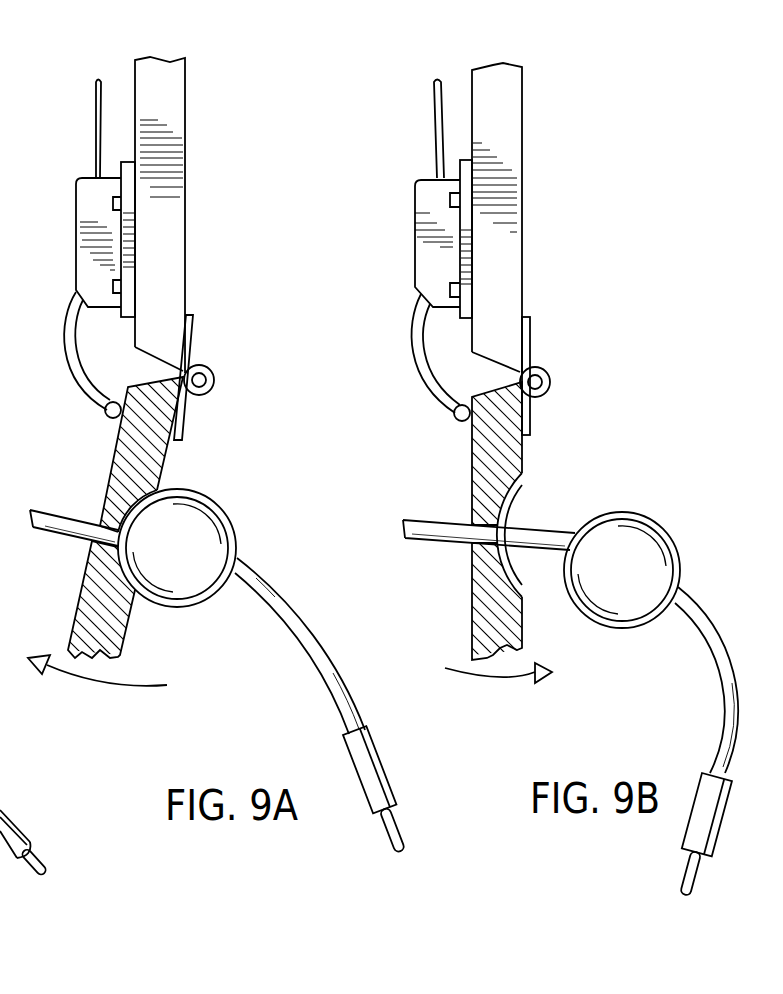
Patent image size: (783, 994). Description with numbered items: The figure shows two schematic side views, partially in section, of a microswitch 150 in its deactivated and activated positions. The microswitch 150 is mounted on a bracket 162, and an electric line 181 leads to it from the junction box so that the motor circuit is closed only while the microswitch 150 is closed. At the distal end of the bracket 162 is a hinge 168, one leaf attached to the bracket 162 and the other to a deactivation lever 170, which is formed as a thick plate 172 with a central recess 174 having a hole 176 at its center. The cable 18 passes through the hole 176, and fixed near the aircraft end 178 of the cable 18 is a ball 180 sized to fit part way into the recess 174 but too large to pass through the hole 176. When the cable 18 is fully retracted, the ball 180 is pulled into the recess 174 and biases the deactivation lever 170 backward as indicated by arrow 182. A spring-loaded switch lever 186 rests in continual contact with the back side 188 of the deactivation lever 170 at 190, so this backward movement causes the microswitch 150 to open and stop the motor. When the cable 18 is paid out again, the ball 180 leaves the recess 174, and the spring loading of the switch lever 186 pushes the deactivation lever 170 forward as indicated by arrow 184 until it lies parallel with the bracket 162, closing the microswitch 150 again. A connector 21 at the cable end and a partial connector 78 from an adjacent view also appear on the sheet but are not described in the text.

In FIG. 9A, the cable 18 is at (312, 650).
In FIG. 9B, the cable 18 is at (718, 670).
In FIG. 9A, the connector 21 is at (360, 770).
In FIG. 9B, the connector 21 is at (705, 818).
In FIG. 9A, the connector (adjacent figure, partial) 78 is at (23, 806).
In FIG. 9A, the microswitch 150 is at (80, 238).
In FIG. 9B, the microswitch 150 is at (422, 237).
In FIG. 9A, the bracket 162 is at (172, 205).
In FIG. 9B, the bracket 162 is at (513, 178).
In FIG. 9A, the hinge 168 is at (202, 373).
In FIG. 9B, the hinge 168 is at (547, 372).
In FIG. 9A, the deactivation lever 170 is at (112, 473).
In FIG. 9B, the deactivation lever 170 is at (470, 455).
In FIG. 9A, the thick plate 172 is at (100, 608).
In FIG. 9B, the thick plate 172 is at (470, 602).
In FIG. 9A, the central recess 174 is at (162, 485).
In FIG. 9B, the central recess 174 is at (523, 482).
In FIG. 9A, the hole 176 is at (97, 543).
In FIG. 9B, the hole 176 is at (470, 547).
In FIG. 9A, the aircraft (distal) end 178 is at (352, 720).
In FIG. 9B, the aircraft (distal) end 178 is at (718, 760).
In FIG. 9A, the ball 180 is at (203, 517).
In FIG. 9B, the ball 180 is at (638, 515).
In FIG. 9A, the electric line 181 is at (98, 122).
In FIG. 9B, the electric line 181 is at (440, 120).
In FIG. 9A, the arrow 182 is at (92, 678).
In FIG. 9B, the arrow 184 is at (487, 677).
In FIG. 9A, the switch lever 186 is at (62, 325).
In FIG. 9B, the switch lever 186 is at (420, 342).
In FIG. 9A, the back side 188 is at (107, 498).
In FIG. 9B, the back side 188 is at (470, 503).
In FIG. 9A, the contact point 190 is at (107, 412).
In FIG. 9B, the contact point 190 is at (455, 418).